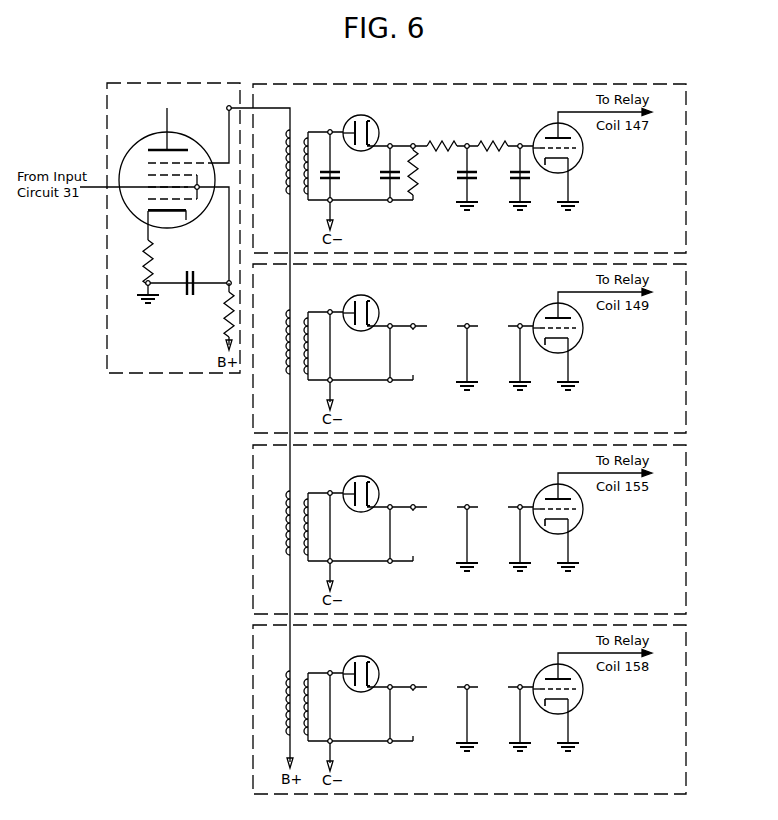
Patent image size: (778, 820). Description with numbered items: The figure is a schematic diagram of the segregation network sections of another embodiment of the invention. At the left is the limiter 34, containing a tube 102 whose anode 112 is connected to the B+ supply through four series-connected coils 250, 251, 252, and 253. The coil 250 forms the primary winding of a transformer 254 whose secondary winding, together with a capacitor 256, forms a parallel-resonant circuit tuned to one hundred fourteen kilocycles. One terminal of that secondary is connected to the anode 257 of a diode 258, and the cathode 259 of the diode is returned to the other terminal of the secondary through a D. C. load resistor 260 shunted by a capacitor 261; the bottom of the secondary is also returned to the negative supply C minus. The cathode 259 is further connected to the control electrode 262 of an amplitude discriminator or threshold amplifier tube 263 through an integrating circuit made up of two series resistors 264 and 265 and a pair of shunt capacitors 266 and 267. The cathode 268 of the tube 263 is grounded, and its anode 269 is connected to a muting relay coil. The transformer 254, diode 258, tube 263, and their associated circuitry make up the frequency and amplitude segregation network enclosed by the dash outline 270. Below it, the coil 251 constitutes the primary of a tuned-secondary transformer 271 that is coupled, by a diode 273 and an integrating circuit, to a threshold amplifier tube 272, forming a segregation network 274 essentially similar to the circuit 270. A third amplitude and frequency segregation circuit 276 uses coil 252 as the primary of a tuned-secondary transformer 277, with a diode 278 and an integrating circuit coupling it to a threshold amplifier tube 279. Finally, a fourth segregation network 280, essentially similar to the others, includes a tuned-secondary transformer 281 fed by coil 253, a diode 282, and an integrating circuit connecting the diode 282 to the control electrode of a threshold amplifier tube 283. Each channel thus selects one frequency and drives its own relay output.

The limiter 34 is at (197, 83).
The tube 102 is at (193, 141).
The anode 112 is at (158, 148).
The coil 250 is at (288, 163).
The coil 251 is at (273, 342).
The coil 252 is at (272, 523).
The coil 253 is at (270, 703).
The transformer 254 is at (324, 128).
The capacitor 256 is at (340, 178).
The anode 257 is at (352, 120).
The diode 258 is at (370, 116).
The cathode 259 is at (379, 130).
The D. C. load resistor 260 is at (418, 173).
The capacitor 261 is at (383, 172).
The control electrode 262 is at (583, 148).
The amplitude discriminator or threshold amplifier tube 263 is at (579, 158).
The resistor 264 is at (447, 143).
The resistor 265 is at (494, 143).
The shunt capacitor 266 is at (463, 171).
The shunt capacitor 267 is at (516, 171).
The cathode 268 is at (552, 167).
The anode 269 is at (552, 136).
The frequency and amplitude segregation network 270 is at (688, 150).
The tuned-secondary transformer 271 is at (309, 335).
The tube 272 is at (578, 331).
The diode 273 is at (377, 303).
The segregation network 274 is at (490, 348).
The amplitude and frequency segregation circuit 276 is at (490, 529).
The tuned-secondary transformer 277 is at (309, 516).
The diode 278 is at (377, 484).
The threshold amplifier tube 279 is at (578, 512).
The segregation network 280 is at (490, 709).
The tuned-secondary transformer 281 is at (309, 696).
The diode 282 is at (377, 664).
The threshold amplifier tube 283 is at (578, 692).